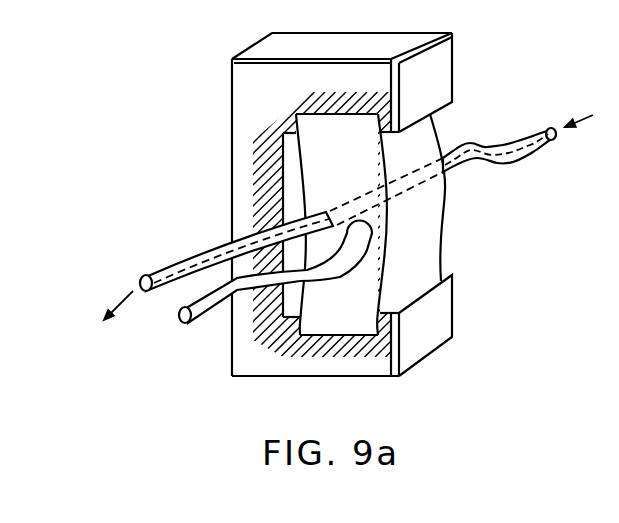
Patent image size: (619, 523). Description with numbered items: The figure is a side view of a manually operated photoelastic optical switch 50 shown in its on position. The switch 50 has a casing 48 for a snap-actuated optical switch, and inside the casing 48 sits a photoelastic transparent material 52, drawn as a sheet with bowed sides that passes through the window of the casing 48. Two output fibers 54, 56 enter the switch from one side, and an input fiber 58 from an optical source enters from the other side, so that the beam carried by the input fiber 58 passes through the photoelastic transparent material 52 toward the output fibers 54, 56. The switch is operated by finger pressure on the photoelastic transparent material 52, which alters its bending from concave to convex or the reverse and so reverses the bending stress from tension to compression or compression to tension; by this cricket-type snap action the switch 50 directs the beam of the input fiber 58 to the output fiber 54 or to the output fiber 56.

The casing 48 is at (447, 45).
The optical switch 50 is at (511, 225).
The photoelastic transparent material 52 is at (427, 123).
The output fiber 54 is at (181, 257).
The output fiber 56 is at (204, 315).
The input fiber 58 is at (535, 150).